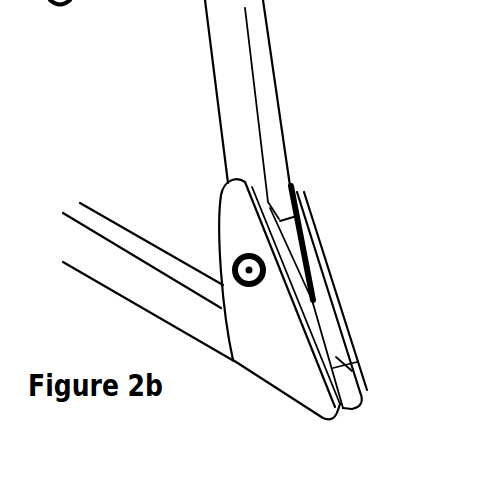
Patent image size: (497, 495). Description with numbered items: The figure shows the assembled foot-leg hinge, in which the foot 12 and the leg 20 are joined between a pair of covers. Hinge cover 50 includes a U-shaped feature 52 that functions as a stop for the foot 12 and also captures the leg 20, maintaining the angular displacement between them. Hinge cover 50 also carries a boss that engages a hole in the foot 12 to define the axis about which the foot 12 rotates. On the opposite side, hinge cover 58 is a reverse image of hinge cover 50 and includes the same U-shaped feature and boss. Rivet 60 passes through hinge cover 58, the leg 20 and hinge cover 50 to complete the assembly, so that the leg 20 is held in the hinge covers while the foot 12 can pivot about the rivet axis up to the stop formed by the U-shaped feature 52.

The foot 12 is at (115, 221).
The leg 20 is at (275, 108).
The hinge cover 50 is at (333, 283).
The U-shaped feature 52 is at (303, 243).
The hinge cover 58 is at (268, 348).
The rivet 60 is at (236, 289).